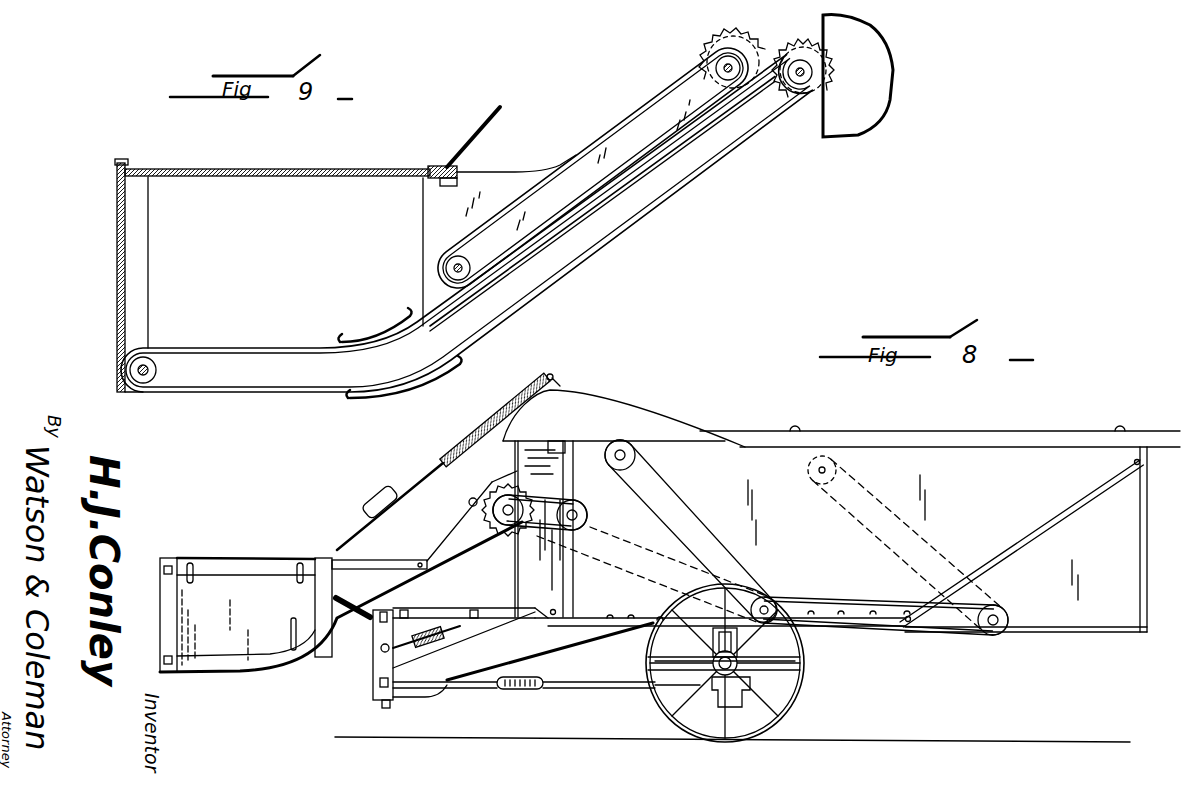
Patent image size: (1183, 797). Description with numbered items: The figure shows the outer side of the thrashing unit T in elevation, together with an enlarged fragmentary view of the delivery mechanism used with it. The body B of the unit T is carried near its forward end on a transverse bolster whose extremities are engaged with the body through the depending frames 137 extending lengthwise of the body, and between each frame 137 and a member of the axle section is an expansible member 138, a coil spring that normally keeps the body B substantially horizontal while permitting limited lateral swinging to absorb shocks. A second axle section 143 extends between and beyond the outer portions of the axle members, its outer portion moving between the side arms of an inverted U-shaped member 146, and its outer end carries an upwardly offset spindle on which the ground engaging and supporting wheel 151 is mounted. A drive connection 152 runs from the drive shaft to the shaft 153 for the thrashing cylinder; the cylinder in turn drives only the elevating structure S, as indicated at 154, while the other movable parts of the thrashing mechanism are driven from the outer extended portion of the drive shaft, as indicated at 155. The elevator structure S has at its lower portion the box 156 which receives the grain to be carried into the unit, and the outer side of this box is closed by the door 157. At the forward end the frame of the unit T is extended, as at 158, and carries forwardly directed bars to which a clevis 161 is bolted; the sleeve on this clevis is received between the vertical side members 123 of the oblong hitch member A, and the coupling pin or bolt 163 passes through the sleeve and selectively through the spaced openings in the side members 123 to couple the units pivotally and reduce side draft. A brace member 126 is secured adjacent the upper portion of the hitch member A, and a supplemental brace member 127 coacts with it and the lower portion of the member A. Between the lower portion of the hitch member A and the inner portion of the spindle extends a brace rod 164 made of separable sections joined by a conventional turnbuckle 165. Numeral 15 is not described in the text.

In FIG. 8, the axle bar 15 is at (718, 685).
In FIG. 8, the vertical side members 123 is at (378, 664).
In FIG. 8, the brace member 126 is at (470, 612).
In FIG. 8, the supplemental brace member 127 is at (470, 686).
In FIG. 8, the depending frames 137 is at (795, 650).
In FIG. 8, the expansible member 138 is at (742, 698).
In FIG. 8, the second axle section 143 is at (718, 672).
In FIG. 8, the inverted U-shaped member 146 is at (712, 640).
In FIG. 8, the ground engaging and supporting wheel 151 is at (797, 703).
In FIG. 8, the drive connection 152 is at (660, 588).
In FIG. 8, the shaft 153 is at (590, 520).
In FIG. 8, the drive 154 is at (546, 532).
In FIG. 8, the drive 155 is at (805, 595).
In FIG. 9, the box 156 is at (121, 168).
In FIG. 8, the box 156 is at (262, 568).
In FIG. 8, the door 157 is at (220, 640).
In FIG. 8, the frame extension 158 is at (483, 627).
In FIG. 8, the clevis 161 is at (406, 648).
In FIG. 8, the coupling pin or bolt 163 is at (381, 648).
In FIG. 8, the brace rod 164 is at (595, 682).
In FIG. 8, the turnbuckle 165 is at (528, 690).
In FIG. 8, the hitch member A is at (372, 670).
In FIG. 8, the body B is at (993, 483).
In FIG. 9, the elevating structure S is at (603, 133).
In FIG. 8, the elevating structure S is at (417, 543).
In FIG. 8, the thrashing unit T is at (765, 428).